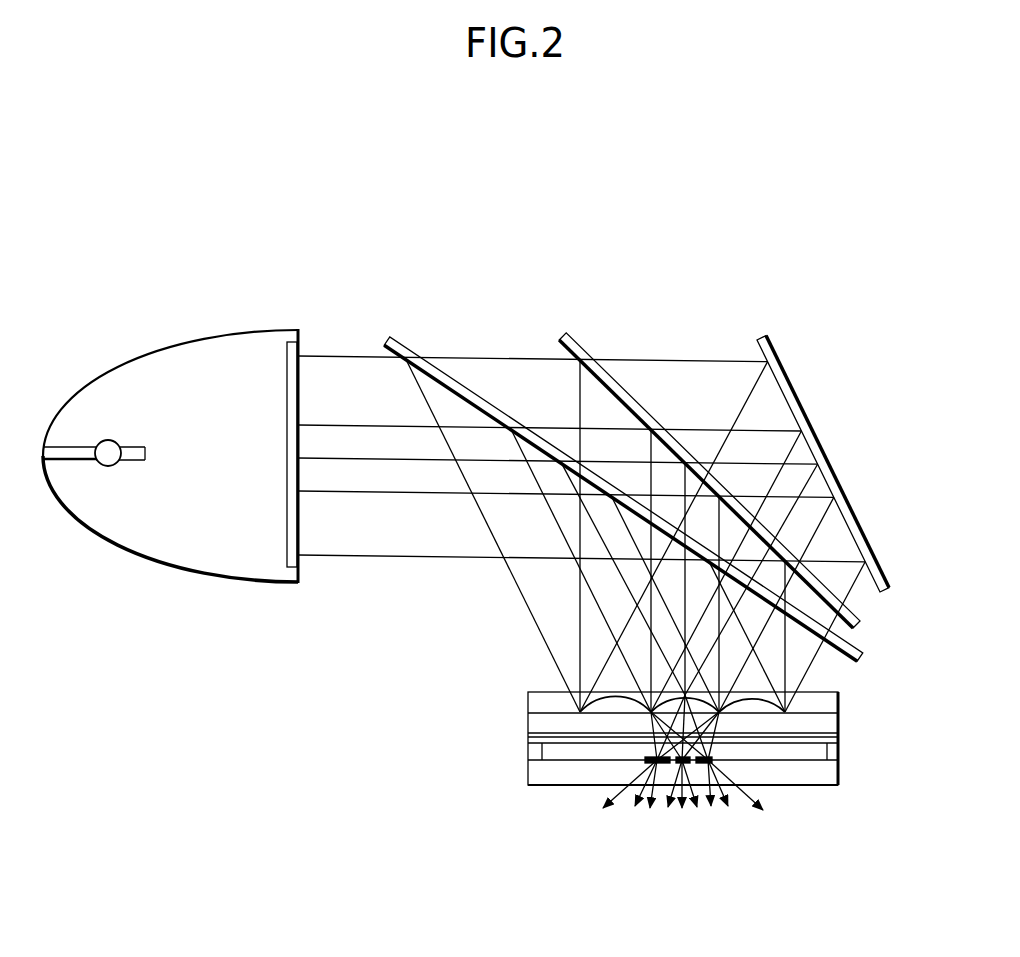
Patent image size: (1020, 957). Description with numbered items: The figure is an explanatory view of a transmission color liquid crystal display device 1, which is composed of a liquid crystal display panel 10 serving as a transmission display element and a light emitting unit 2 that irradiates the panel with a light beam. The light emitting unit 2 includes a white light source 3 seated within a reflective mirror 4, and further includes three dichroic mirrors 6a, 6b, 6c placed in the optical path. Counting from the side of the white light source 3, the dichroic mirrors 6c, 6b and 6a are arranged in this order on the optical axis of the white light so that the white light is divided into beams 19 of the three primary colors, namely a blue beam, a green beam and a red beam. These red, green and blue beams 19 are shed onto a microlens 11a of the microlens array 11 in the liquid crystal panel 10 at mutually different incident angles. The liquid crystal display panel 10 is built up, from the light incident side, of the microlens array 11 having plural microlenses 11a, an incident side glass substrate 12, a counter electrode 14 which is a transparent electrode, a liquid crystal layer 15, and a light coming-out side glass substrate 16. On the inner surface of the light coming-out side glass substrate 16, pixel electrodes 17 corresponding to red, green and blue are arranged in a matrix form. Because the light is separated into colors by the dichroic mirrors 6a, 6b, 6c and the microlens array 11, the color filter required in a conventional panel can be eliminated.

The transmission color liquid crystal display device 1 is at (552, 238).
The light emitting unit 2 is at (280, 298).
The white light source 3 is at (107, 468).
The reflective mirror 4 is at (153, 347).
The dichroic mirror 6a is at (800, 313).
The dichroic mirror 6b is at (617, 313).
The dichroic mirror 6c is at (432, 313).
The liquid crystal display panel 10 is at (852, 714).
The microlens array 11 is at (530, 700).
The microlens 11a is at (745, 695).
The incident side glass substrate 12 is at (530, 723).
The counter electrode 14 is at (530, 743).
The liquid crystal layer 15 is at (530, 777).
The light coming-out side glass substrate 16 is at (552, 788).
The pixel electrodes 17 is at (712, 757).
The beams of three primary colors 19 is at (818, 673).